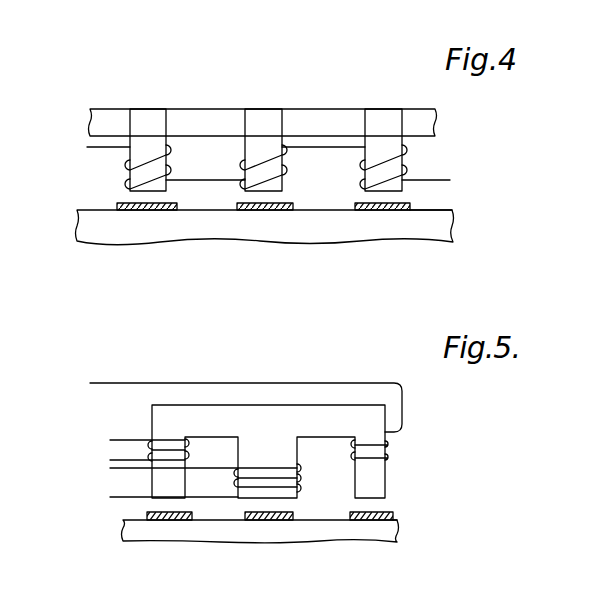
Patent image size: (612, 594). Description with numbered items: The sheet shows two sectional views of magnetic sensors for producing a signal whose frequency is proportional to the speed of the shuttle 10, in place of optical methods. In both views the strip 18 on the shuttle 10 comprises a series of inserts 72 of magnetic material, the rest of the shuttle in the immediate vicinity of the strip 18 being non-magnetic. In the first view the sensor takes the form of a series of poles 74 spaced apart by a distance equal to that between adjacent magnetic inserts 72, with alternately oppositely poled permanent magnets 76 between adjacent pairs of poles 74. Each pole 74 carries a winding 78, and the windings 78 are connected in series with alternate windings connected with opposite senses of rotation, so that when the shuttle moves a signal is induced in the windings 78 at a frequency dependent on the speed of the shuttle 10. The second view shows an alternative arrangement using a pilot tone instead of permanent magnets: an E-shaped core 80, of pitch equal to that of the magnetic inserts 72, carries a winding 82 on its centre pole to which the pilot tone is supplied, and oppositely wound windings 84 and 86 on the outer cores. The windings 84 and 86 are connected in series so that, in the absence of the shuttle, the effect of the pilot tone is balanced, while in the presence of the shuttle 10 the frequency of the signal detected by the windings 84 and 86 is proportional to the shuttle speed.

In FIG. 4, the shuttle 10 is at (454, 227).
In FIG. 5, the shuttle 10 is at (398, 537).
In FIG. 4, the strip 18 is at (450, 209).
In FIG. 5, the strip 18 is at (400, 512).
In FIG. 4, the insert 72 is at (118, 203).
In FIG. 5, the insert 72 is at (147, 515).
In FIG. 4, the pole 74 is at (152, 113).
In FIG. 4, the permanent magnet 76 is at (205, 112).
In FIG. 4, the winding 78 is at (412, 162).
In FIG. 5, the E-shaped core 80 is at (286, 412).
In FIG. 5, the winding 82 is at (110, 470).
In FIG. 5, the winding 84 is at (186, 437).
In FIG. 5, the winding 86 is at (388, 445).